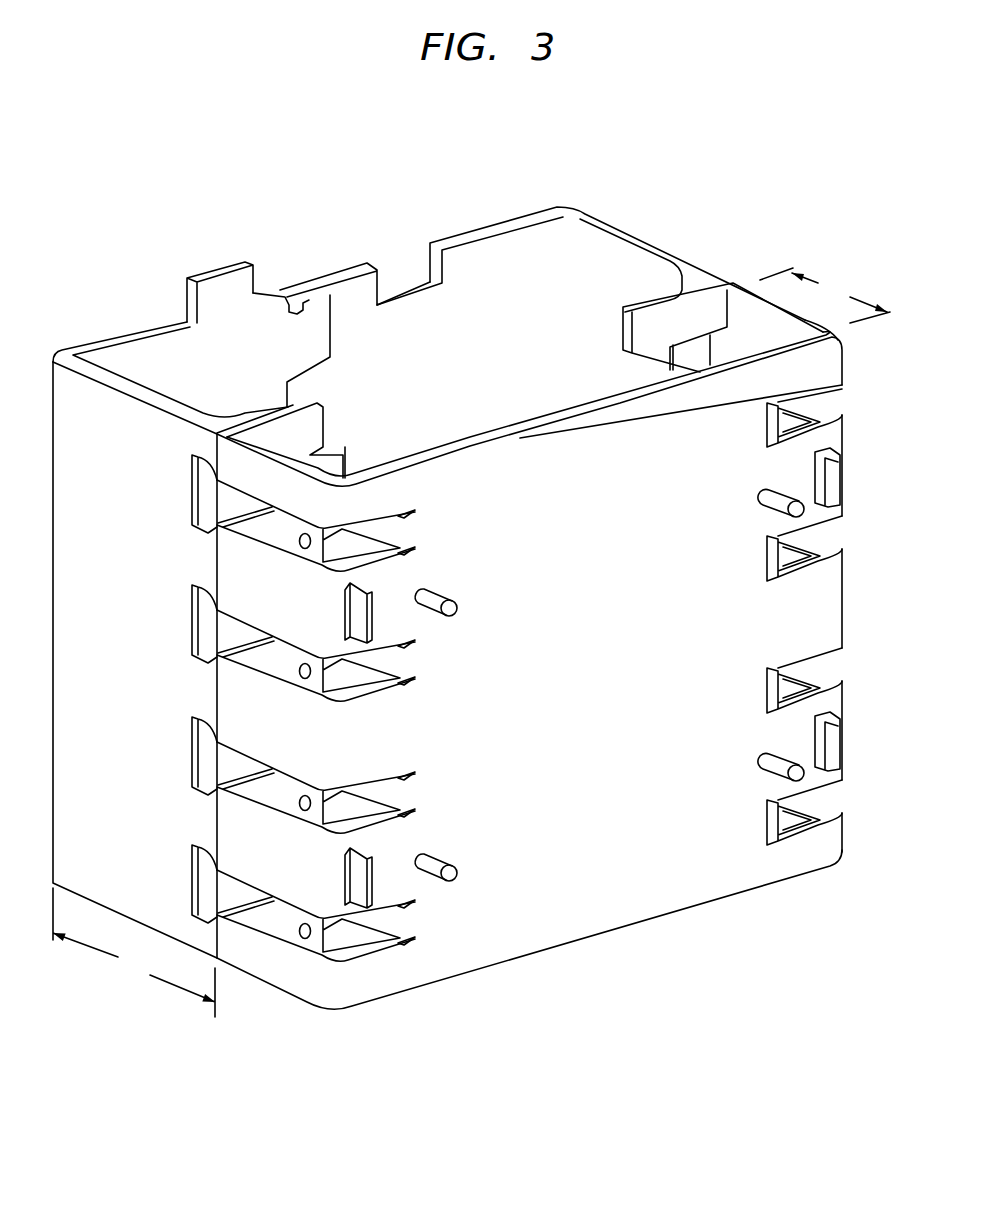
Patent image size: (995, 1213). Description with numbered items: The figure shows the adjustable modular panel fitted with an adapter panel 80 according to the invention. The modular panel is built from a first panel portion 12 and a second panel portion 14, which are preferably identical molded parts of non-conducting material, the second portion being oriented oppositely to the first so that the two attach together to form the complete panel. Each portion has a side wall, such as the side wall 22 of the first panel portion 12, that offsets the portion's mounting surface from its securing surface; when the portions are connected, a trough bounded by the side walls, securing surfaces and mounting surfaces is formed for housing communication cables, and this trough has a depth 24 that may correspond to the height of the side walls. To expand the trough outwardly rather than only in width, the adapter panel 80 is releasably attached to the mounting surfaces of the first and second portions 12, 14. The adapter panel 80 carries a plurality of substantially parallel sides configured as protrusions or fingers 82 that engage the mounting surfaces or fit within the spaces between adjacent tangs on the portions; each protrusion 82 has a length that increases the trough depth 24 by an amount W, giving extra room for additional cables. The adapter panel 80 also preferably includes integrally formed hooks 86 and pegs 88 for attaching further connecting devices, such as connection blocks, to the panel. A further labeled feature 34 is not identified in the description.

The first panel portion 12 is at (145, 353).
The second panel portion 14 is at (492, 250).
The side wall 22 is at (136, 633).
The trough depth 24 is at (134, 952).
The top rim 34 is at (630, 220).
The adapter panel 80 is at (592, 937).
The protrusion 82 is at (285, 740).
The hook 86 is at (833, 482).
The peg 88 is at (805, 512).